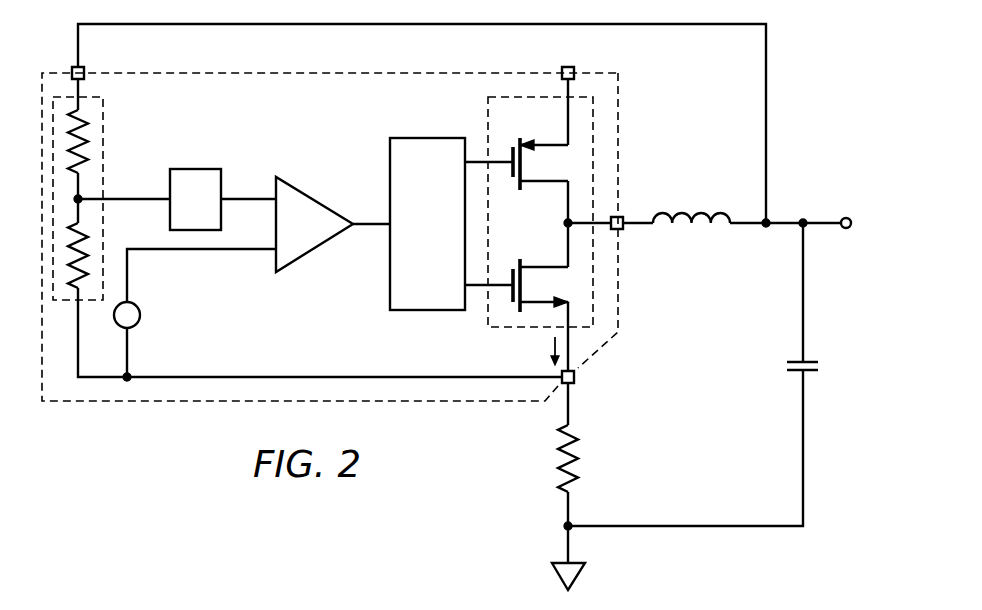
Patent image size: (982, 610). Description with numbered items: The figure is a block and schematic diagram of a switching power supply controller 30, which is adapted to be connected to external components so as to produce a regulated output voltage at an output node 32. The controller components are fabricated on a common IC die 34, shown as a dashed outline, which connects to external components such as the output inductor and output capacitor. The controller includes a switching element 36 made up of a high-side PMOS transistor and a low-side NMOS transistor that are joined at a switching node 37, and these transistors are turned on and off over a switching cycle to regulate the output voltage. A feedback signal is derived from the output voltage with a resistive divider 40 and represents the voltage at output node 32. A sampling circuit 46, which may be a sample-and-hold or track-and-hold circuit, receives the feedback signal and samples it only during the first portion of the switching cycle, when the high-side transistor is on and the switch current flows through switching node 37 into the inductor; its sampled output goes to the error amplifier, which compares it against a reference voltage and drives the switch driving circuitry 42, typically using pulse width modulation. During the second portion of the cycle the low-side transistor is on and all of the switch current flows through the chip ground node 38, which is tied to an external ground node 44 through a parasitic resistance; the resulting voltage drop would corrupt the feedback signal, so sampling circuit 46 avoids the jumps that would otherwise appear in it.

The controller 30 is at (652, 118).
The output node 32 is at (820, 223).
The common IC die 34 is at (145, 403).
The switching element 36 is at (488, 325).
The switching node 37 is at (567, 224).
The chip ground node 38 is at (577, 380).
The resistive divider 40 is at (103, 119).
The switch driving circuitry 42 is at (427, 138).
The external ground node 44 is at (563, 527).
The sampling circuit 46 is at (194, 169).